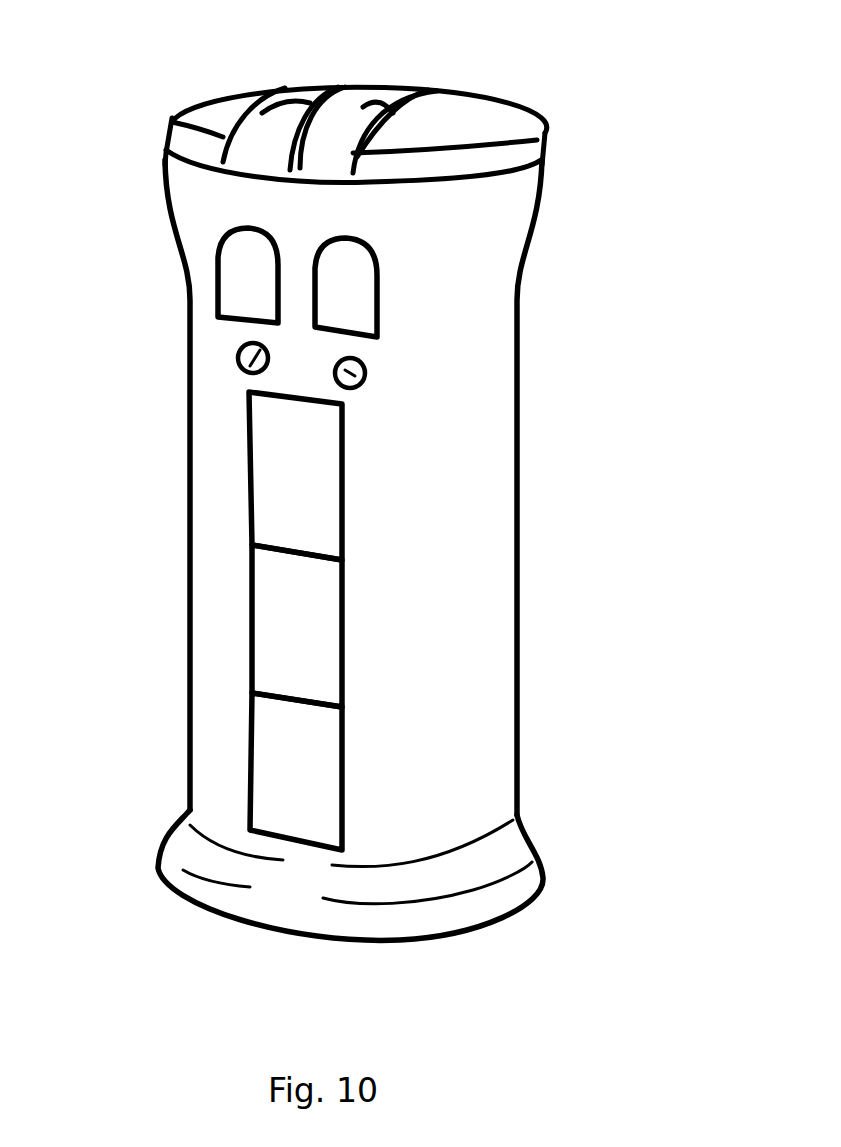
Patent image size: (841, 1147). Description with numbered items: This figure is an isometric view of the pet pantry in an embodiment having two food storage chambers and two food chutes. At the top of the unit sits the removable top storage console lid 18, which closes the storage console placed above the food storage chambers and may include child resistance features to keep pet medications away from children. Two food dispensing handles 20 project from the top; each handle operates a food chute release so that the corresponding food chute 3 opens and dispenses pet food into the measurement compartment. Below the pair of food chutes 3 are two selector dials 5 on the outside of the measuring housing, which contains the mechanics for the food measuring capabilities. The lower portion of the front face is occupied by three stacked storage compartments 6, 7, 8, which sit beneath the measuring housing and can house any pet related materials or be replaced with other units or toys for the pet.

The food chute 3 is at (235, 290).
The selector dial 5 is at (247, 364).
The storage compartment 6 is at (272, 510).
The storage compartment 7 is at (278, 636).
The storage compartment 8 is at (273, 773).
The removable top storage console lid 18 is at (205, 109).
The food dispensing handle 20 is at (297, 100).